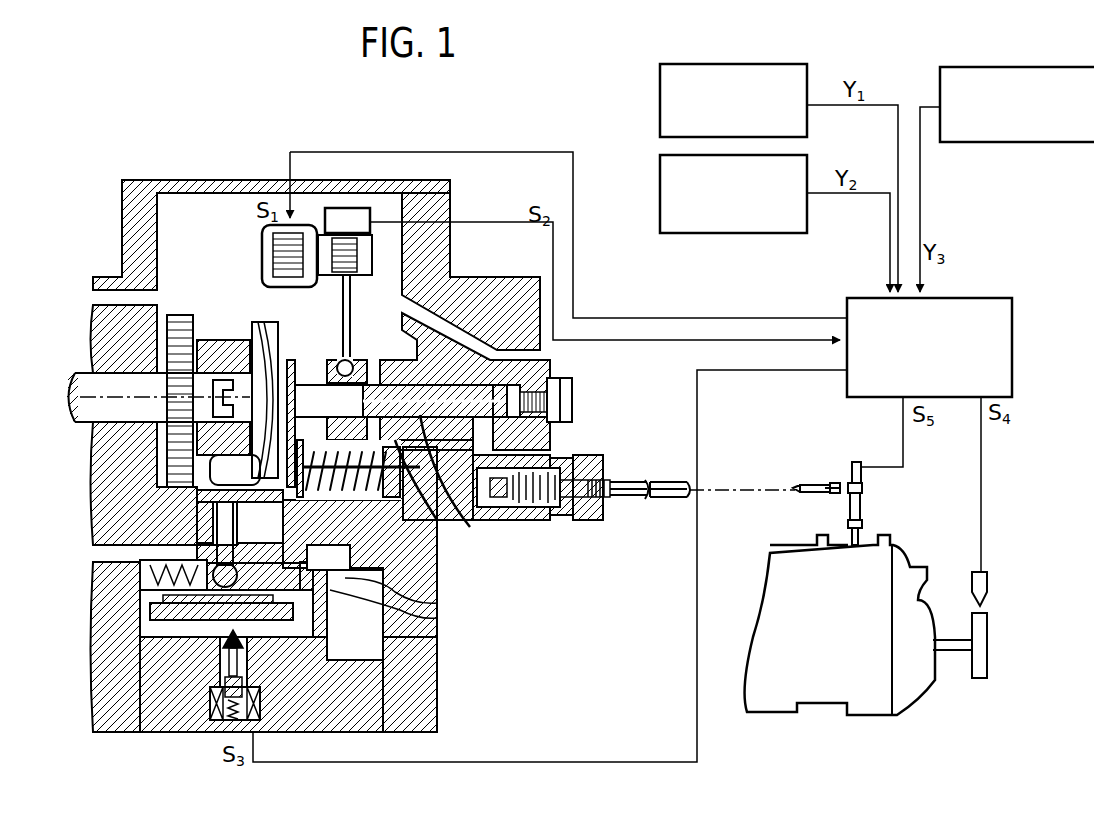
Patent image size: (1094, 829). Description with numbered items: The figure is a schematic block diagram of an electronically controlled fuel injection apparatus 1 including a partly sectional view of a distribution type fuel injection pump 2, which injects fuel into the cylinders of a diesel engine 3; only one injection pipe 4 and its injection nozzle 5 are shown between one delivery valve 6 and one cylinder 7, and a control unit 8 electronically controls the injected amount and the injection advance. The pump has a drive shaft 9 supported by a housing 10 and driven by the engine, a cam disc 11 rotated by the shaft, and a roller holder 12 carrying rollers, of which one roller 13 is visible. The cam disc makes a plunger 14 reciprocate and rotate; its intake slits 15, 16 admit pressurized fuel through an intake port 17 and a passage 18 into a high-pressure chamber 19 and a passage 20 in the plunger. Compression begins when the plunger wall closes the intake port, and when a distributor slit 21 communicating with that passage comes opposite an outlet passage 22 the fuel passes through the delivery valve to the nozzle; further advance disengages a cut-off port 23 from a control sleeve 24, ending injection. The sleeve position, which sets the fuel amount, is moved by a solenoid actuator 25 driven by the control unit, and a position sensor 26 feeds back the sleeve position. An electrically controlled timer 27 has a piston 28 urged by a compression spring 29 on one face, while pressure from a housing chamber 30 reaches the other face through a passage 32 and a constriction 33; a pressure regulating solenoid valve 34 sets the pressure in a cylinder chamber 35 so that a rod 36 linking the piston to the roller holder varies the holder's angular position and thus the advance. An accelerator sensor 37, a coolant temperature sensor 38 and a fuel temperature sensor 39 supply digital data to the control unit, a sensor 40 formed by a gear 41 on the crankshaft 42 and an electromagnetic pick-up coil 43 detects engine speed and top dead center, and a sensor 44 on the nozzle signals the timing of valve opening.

The electronically controlled fuel injection apparatus 1 is at (400, 142).
The fuel injection pump 2 is at (241, 178).
The diesel engine 3 is at (818, 716).
The injection pipe 4 is at (658, 481).
The injection nozzle 5 is at (850, 502).
The delivery valve 6 is at (580, 522).
The cylinder 7 is at (860, 540).
The control unit 8 is at (990, 298).
The drive shaft 9 is at (86, 377).
The housing 10 is at (100, 318).
The cam disc 11 is at (262, 330).
The roller holder 12 is at (222, 340).
The roller 13 is at (245, 470).
The plunger 14 is at (292, 378).
The intake slit 15 is at (552, 443).
The intake slit 16 is at (564, 392).
The intake port 17 is at (522, 365).
The passage 18 is at (445, 325).
The high-pressure chamber 19 is at (540, 418).
The passage 20 is at (445, 470).
The fuel passage 21 is at (440, 520).
The outlet passage 22 is at (437, 560).
The cut-off port 23 is at (352, 360).
The control sleeve 24 is at (342, 445).
The solenoid actuator 25 is at (262, 242).
The position sensor 26 is at (365, 228).
The timer 27 is at (312, 548).
The piston 28 is at (288, 604).
The compression spring 29 is at (90, 552).
The housing chamber 30 is at (178, 205).
The passage 32 is at (437, 604).
The constriction 33 is at (437, 620).
The pressure regulating solenoid valve 34 is at (262, 722).
The cylinder chamber 35 is at (330, 580).
The rod 36 is at (235, 522).
The accelerator sensor 37 is at (762, 64).
The coolant temperature sensor 38 is at (735, 233).
The fuel temperature sensor 39 is at (1003, 67).
The sensor 40 is at (998, 610).
The gear 41 is at (987, 658).
The crankshaft 42 is at (955, 650).
The electromagnetic pick-up coil 43 is at (988, 580).
The sensor 44 is at (850, 476).